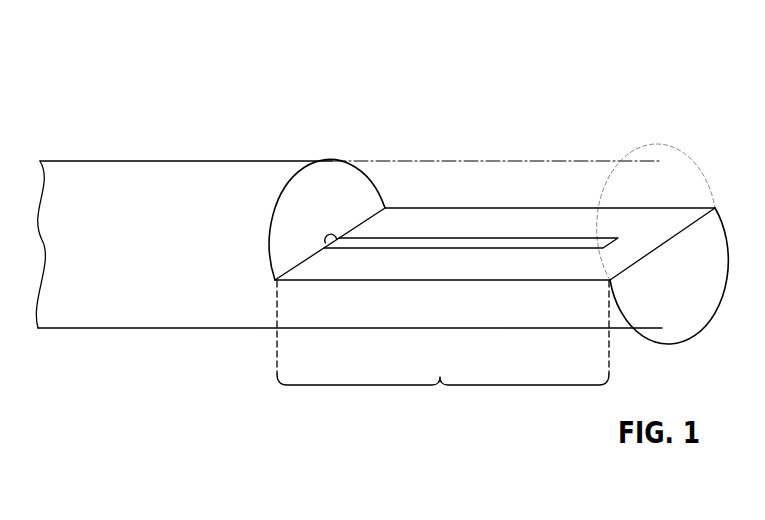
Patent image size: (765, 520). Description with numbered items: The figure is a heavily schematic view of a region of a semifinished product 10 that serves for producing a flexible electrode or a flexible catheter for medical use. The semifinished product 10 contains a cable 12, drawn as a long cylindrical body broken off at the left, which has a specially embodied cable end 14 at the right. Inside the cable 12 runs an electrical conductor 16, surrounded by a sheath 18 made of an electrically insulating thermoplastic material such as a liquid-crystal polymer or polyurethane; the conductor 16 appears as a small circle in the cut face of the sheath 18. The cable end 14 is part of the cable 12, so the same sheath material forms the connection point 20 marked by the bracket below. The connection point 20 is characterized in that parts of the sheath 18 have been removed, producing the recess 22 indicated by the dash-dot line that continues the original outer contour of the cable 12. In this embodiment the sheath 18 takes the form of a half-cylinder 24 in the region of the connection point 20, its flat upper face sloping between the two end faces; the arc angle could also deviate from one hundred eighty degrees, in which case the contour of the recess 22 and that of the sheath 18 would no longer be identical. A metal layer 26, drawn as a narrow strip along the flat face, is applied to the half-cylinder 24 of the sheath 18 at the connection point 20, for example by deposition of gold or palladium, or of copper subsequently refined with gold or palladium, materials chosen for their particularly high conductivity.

The semifinished product 10 is at (551, 83).
The cable 12 is at (165, 172).
The cable end 14 is at (668, 305).
The electrical conductor 16 is at (332, 232).
The sheath 18 is at (310, 188).
The connection point 20 is at (495, 312).
The recess 22 is at (477, 172).
The half-cylinder 24 is at (477, 312).
The metal layer 26 is at (402, 242).